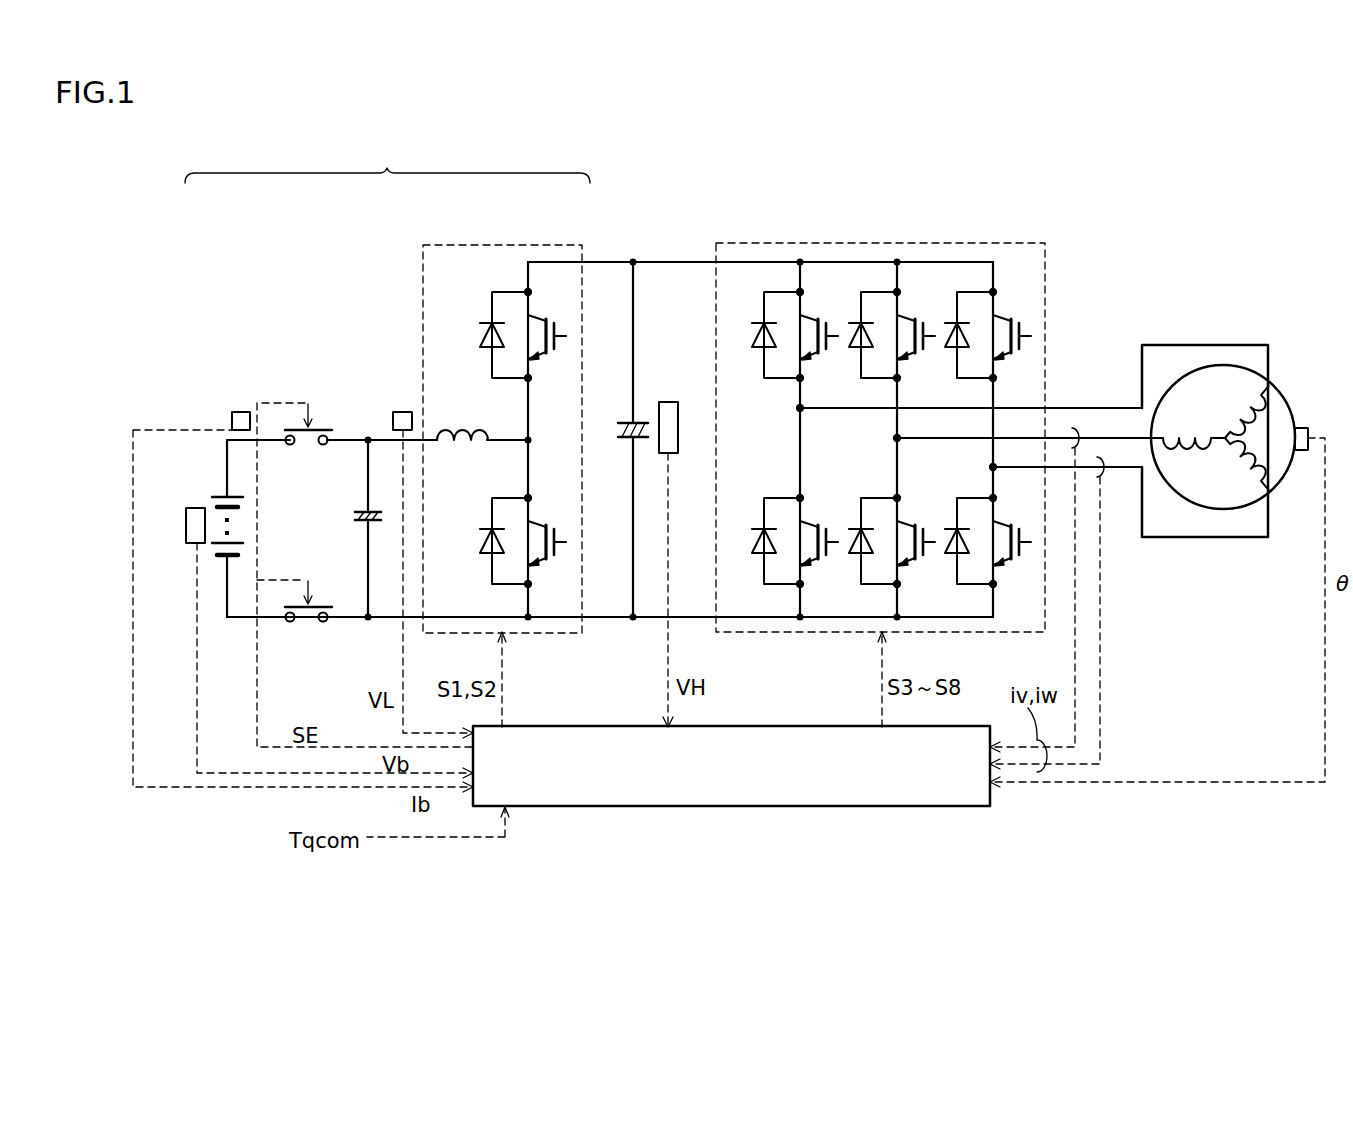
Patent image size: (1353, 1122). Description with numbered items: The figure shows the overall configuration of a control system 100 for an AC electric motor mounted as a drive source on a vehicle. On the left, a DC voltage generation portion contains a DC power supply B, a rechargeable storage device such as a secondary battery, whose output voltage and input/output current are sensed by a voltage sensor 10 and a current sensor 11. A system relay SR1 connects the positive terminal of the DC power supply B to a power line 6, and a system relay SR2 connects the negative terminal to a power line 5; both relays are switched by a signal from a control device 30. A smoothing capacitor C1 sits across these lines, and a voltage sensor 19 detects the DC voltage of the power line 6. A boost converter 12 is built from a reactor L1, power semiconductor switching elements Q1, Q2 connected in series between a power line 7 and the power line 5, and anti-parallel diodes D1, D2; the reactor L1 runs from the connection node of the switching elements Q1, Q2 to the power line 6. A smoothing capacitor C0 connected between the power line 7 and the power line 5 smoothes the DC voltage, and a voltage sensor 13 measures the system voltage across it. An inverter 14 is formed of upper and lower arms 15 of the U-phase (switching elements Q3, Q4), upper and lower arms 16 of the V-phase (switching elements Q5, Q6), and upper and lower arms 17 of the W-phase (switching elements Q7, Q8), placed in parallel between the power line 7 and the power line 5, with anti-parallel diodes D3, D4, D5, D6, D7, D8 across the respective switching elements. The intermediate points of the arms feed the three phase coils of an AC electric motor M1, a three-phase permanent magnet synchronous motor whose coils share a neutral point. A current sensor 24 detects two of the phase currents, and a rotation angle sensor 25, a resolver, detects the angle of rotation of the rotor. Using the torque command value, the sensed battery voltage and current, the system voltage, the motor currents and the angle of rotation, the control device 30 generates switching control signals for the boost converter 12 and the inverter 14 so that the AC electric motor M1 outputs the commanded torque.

The control system 100 is at (700, 172).
The DC power supply B is at (220, 493).
The voltage sensor 10 is at (190, 508).
The current sensor 11 is at (245, 412).
The system relay SR1 is at (322, 428).
The system relay SR2 is at (322, 605).
The smoothing capacitor C1 is at (360, 510).
The power line 6 is at (369, 438).
The voltage sensor 19 is at (400, 412).
The reactor L1 is at (452, 427).
The boost converter 12 is at (508, 245).
The power semiconductor switching element Q1 is at (547, 335).
The power semiconductor switching element Q2 is at (547, 540).
The anti-parallel diode D1 is at (491, 335).
The anti-parallel diode D2 is at (491, 541).
The power line 7 is at (668, 262).
The power line 5 is at (608, 624).
The smoothing capacitor C0 is at (626, 422).
The voltage sensor 13 is at (668, 402).
The inverter 14 is at (877, 243).
The switching element Q3 is at (818, 335).
The switching element Q4 is at (818, 540).
The switching element Q5 is at (915, 335).
The switching element Q6 is at (915, 540).
The switching element Q7 is at (1011, 335).
The switching element Q8 is at (1011, 540).
The anti-parallel diode D3 is at (765, 335).
The anti-parallel diode D4 is at (765, 541).
The anti-parallel diode D5 is at (862, 336).
The anti-parallel diode D6 is at (862, 541).
The anti-parallel diode D7 is at (959, 336).
The anti-parallel diode D8 is at (959, 541).
The upper and lower arms of U-phase 15 is at (783, 417).
The upper and lower arms of V-phase 16 is at (882, 447).
The upper and lower arms of W-phase 17 is at (979, 476).
The current sensor 24 is at (1075, 426).
The AC electric motor M1 is at (1287, 402).
The rotation angle sensor 25 is at (1307, 430).
The control device 30 is at (893, 807).